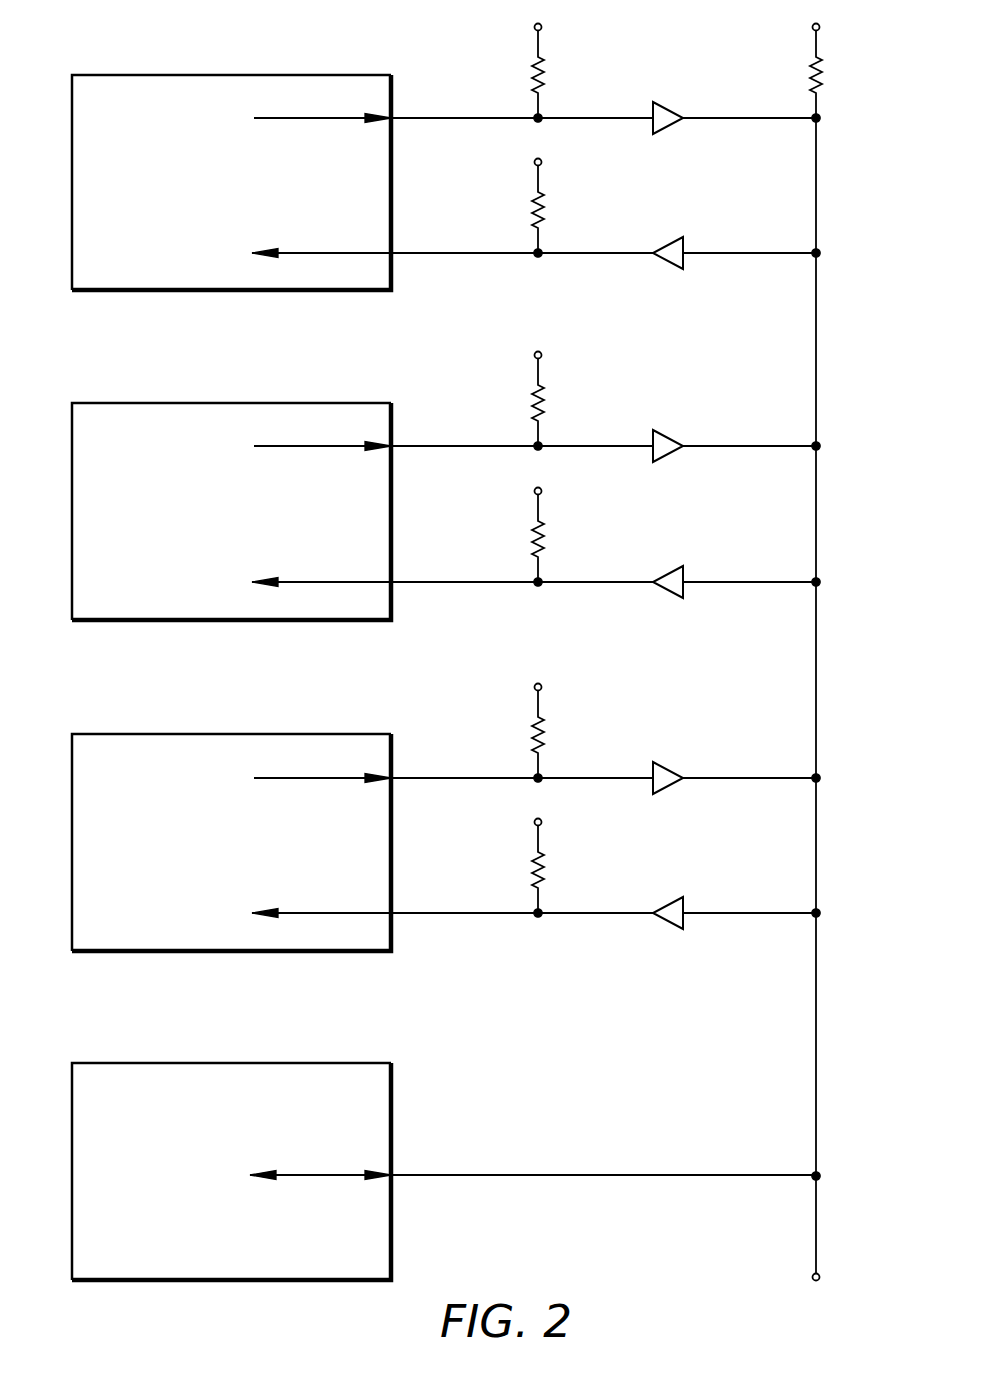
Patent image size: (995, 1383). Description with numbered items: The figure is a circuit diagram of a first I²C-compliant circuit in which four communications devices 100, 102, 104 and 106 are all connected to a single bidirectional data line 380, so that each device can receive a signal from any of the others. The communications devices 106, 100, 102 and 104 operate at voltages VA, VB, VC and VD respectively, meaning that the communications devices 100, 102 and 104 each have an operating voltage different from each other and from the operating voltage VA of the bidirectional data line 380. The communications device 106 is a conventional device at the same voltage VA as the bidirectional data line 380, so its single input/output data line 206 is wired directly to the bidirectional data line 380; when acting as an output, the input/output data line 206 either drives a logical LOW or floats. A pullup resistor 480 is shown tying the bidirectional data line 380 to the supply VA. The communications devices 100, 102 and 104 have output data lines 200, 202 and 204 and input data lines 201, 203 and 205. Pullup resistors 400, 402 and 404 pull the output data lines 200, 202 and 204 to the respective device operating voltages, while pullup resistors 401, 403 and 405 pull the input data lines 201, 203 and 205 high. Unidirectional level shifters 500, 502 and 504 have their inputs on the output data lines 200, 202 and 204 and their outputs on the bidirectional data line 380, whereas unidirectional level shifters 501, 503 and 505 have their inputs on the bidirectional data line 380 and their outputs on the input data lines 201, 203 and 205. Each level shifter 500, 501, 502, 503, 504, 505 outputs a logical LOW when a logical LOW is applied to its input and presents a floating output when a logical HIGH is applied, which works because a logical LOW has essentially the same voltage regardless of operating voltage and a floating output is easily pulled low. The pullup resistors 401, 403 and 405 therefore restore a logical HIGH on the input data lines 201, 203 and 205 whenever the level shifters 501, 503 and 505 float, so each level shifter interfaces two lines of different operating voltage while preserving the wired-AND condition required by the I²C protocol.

The communications device 100 is at (335, 48).
The communications device 102 is at (335, 376).
The communications device 104 is at (335, 708).
The communications device 106 is at (335, 1036).
The output data line 200 is at (394, 116).
The input data line 201 is at (394, 251).
The output data line 202 is at (394, 444).
The input data line 203 is at (394, 580).
The output data line 204 is at (394, 776).
The input data line 205 is at (394, 911).
The input/output data line 206 is at (392, 1173).
The pullup resistor 400 is at (531, 72).
The pullup resistor 401 is at (531, 207).
The pullup resistor 402 is at (531, 400).
The pullup resistor 403 is at (531, 536).
The pullup resistor 404 is at (531, 732).
The pullup resistor 405 is at (531, 867).
The pull-up resistor 480 is at (823, 74).
The bidirectional data line 380 is at (820, 148).
The unidirectional level shifter 500 is at (661, 101).
The unidirectional level shifter 501 is at (661, 236).
The unidirectional level shifter 502 is at (661, 429).
The unidirectional level shifter 503 is at (661, 565).
The unidirectional level shifter 504 is at (661, 761).
The unidirectional level shifter 505 is at (661, 896).